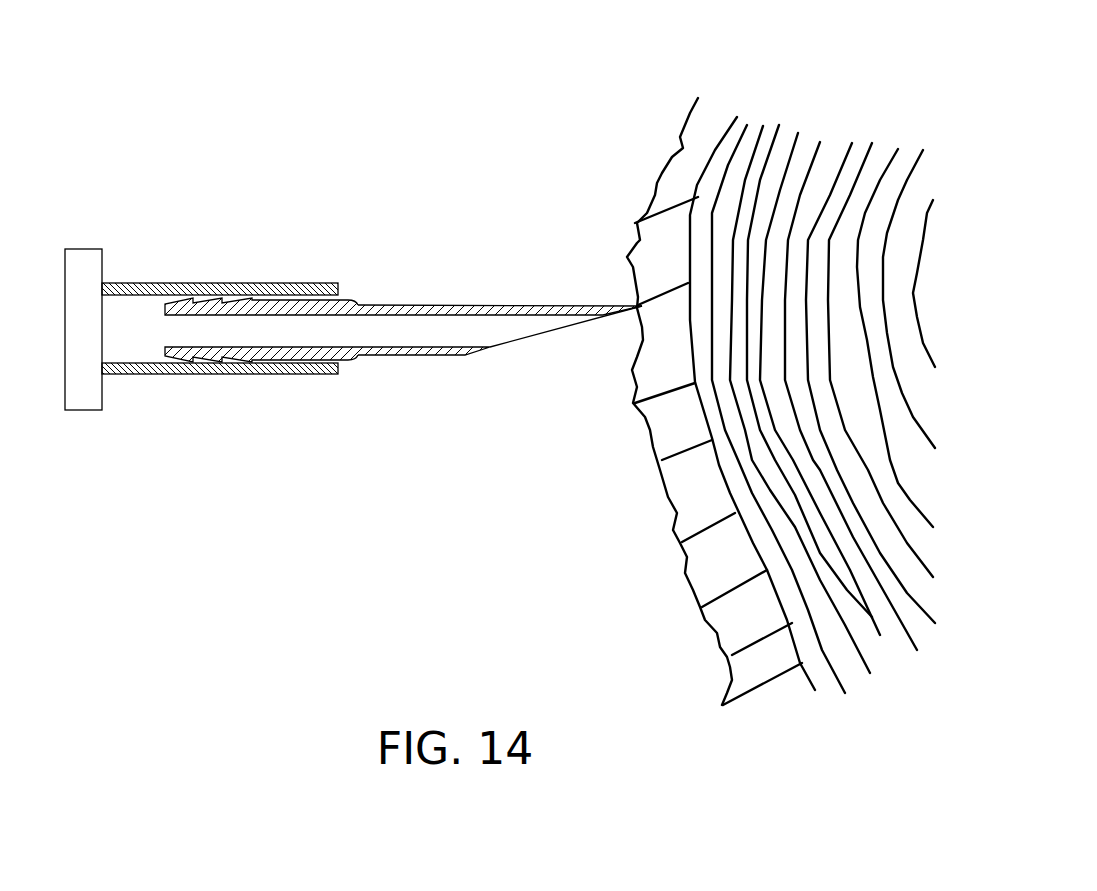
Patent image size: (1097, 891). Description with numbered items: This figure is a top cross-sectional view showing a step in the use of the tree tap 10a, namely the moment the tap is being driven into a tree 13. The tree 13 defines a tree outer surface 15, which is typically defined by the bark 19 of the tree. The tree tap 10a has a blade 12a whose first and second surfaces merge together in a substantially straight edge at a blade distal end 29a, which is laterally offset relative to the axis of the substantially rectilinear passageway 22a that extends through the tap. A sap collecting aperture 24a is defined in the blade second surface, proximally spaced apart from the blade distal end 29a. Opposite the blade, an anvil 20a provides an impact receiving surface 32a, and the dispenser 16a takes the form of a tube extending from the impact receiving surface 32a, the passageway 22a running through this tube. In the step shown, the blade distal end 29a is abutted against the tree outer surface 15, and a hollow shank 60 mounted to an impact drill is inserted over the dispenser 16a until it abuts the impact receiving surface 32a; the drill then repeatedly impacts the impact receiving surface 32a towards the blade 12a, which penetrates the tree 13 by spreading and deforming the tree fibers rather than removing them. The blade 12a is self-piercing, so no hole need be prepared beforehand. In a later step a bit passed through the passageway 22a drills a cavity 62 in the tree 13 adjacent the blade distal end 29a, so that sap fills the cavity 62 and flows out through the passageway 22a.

The cavity 62 is at (81, 264).
The hollow shank 60 is at (322, 374).
The tree tap 10a is at (403, 306).
The anvil 20a is at (353, 298).
The dispenser 16a is at (267, 358).
The blade 12a is at (512, 305).
The passageway 22a is at (412, 346).
The sap collecting aperture 24a is at (490, 350).
The blade distal end 29a is at (640, 307).
The impact receiving surface 32a is at (340, 363).
The tree 13 is at (699, 357).
The tree outer surface 15 is at (658, 185).
The bark 19 is at (712, 130).